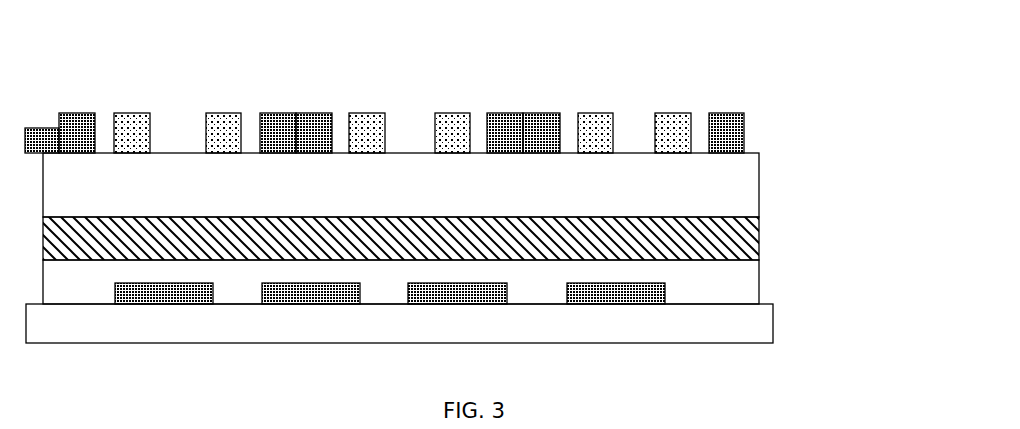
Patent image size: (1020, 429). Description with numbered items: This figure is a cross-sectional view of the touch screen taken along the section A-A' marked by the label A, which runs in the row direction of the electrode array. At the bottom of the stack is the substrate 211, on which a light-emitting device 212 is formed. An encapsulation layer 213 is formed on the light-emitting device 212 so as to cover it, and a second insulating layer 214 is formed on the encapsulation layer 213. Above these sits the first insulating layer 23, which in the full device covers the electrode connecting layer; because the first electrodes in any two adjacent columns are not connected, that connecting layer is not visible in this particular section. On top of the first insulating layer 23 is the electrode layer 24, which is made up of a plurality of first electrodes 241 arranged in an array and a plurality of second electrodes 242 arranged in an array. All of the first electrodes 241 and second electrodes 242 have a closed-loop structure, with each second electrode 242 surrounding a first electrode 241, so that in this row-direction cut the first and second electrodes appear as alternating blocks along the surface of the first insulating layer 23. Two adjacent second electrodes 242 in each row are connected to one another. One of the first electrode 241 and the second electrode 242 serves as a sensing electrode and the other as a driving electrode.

The substrate 211 is at (734, 323).
The light-emitting device 212 is at (665, 297).
The encapsulation layer 213 is at (734, 274).
The second insulating layer 214 is at (740, 240).
The first insulating layer 23 is at (723, 164).
The electrode layer 24 is at (734, 72).
The first electrode 241 is at (662, 113).
The second electrode 242 is at (727, 113).
The section A-A' A is at (42, 125).